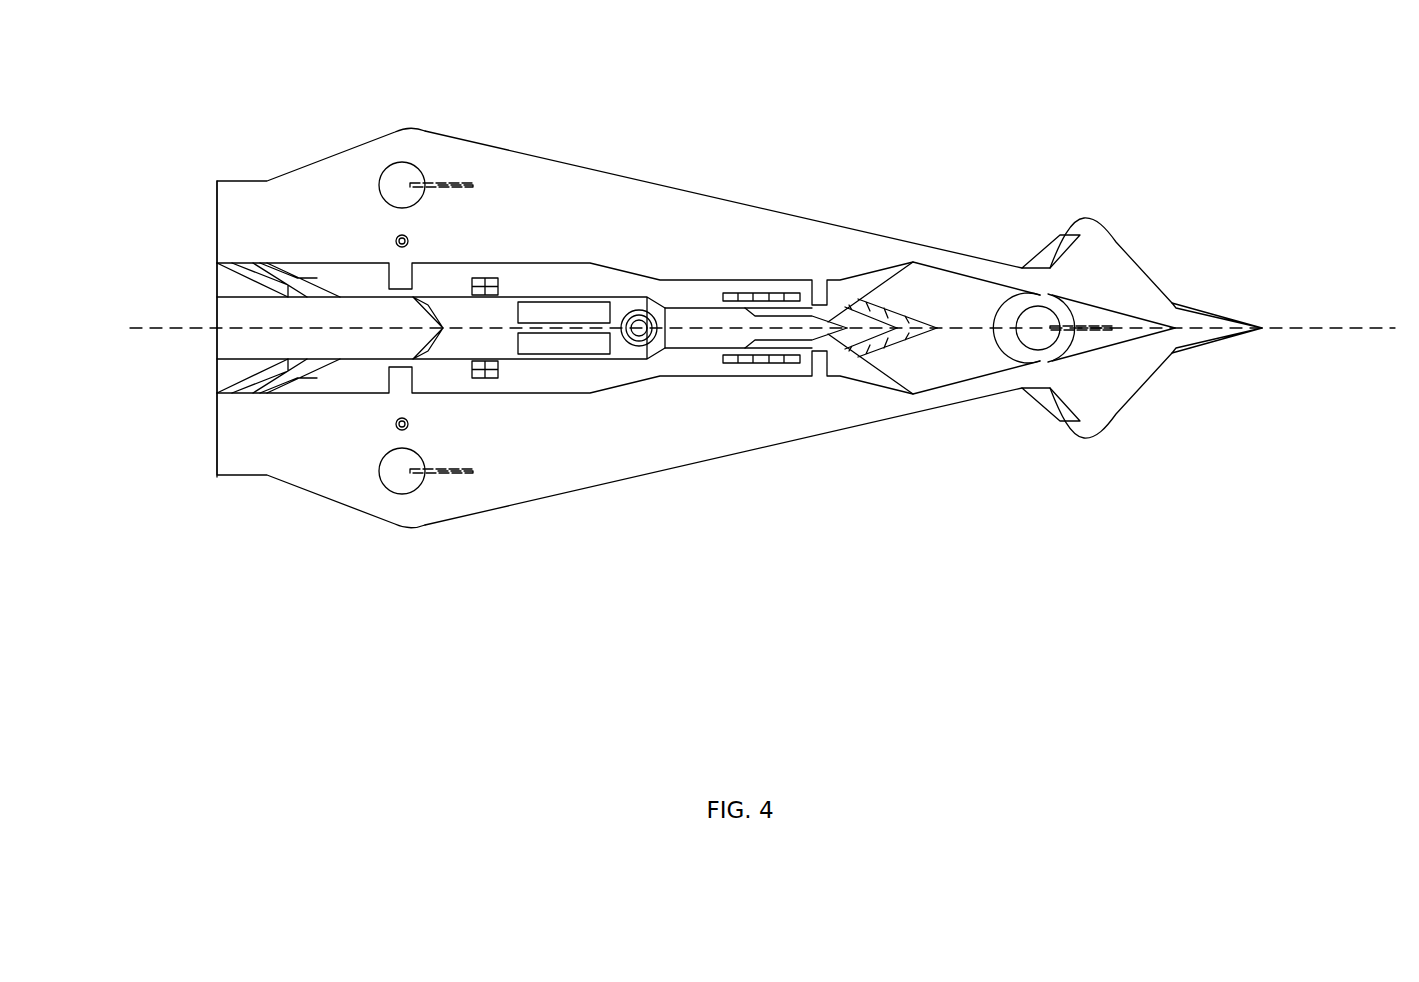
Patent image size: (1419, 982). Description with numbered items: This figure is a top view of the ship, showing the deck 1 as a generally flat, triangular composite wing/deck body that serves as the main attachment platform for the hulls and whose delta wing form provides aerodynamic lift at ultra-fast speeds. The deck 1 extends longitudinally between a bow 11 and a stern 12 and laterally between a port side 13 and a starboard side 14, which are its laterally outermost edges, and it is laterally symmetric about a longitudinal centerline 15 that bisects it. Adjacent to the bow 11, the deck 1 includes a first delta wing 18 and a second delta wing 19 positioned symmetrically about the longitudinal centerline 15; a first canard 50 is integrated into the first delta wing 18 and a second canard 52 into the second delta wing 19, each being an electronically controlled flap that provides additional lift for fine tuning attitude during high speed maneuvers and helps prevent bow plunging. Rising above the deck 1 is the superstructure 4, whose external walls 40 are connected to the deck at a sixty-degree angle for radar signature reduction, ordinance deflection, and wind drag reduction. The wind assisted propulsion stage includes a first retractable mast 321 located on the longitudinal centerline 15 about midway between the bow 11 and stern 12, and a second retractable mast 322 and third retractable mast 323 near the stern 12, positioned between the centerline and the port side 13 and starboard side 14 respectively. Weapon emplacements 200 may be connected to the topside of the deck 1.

The deck 1 is at (592, 445).
The superstructure 4 is at (605, 232).
The bow 11 is at (1270, 288).
The stern 12 is at (185, 383).
The port side 13 is at (720, 158).
The starboard side 14 is at (718, 489).
The longitudinal centerline 15 is at (1343, 336).
The first delta wing 18 is at (1108, 244).
The second delta wing 19 is at (1108, 422).
The external walls 40 is at (673, 287).
The first canard 50 is at (1048, 250).
The second canard 52 is at (1048, 404).
The weapon emplacements 200 is at (422, 166).
The first retractable mast 321 is at (639, 310).
The second retractable mast 322 is at (397, 237).
The third retractable mast 323 is at (408, 424).